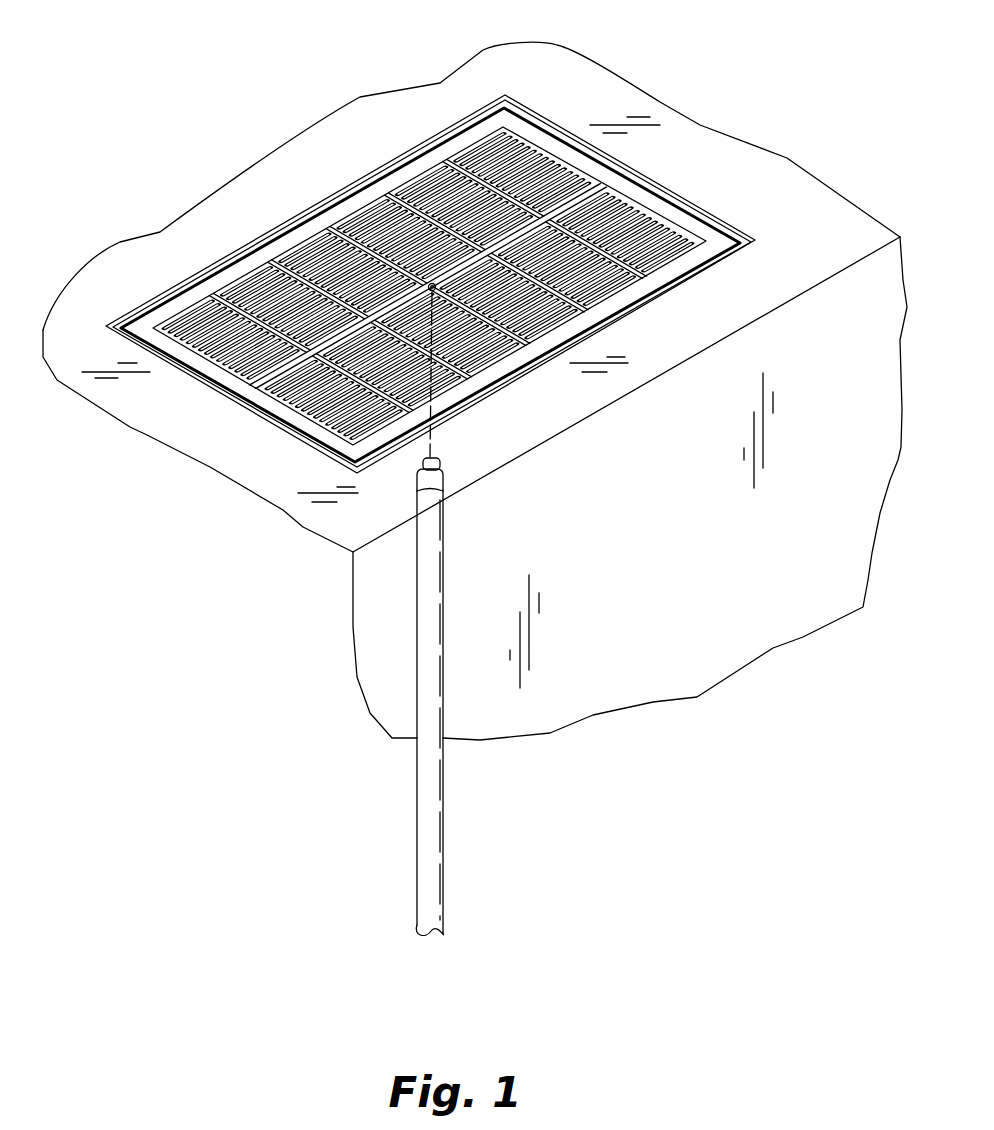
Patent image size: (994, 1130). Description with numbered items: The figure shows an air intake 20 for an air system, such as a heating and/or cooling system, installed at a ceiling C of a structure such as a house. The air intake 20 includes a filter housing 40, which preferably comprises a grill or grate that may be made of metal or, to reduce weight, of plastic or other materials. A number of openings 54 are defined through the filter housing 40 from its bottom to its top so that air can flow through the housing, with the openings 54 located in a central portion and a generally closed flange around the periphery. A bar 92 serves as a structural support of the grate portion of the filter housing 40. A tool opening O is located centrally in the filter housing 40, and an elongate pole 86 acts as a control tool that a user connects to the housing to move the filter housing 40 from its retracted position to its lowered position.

The air intake 20 is at (437, 490).
The ceiling C is at (558, 68).
The tool opening O is at (428, 290).
The filter housing 40 is at (712, 208).
The openings 54 is at (660, 250).
The bar 92 is at (285, 372).
The elongate pole 86 is at (443, 820).